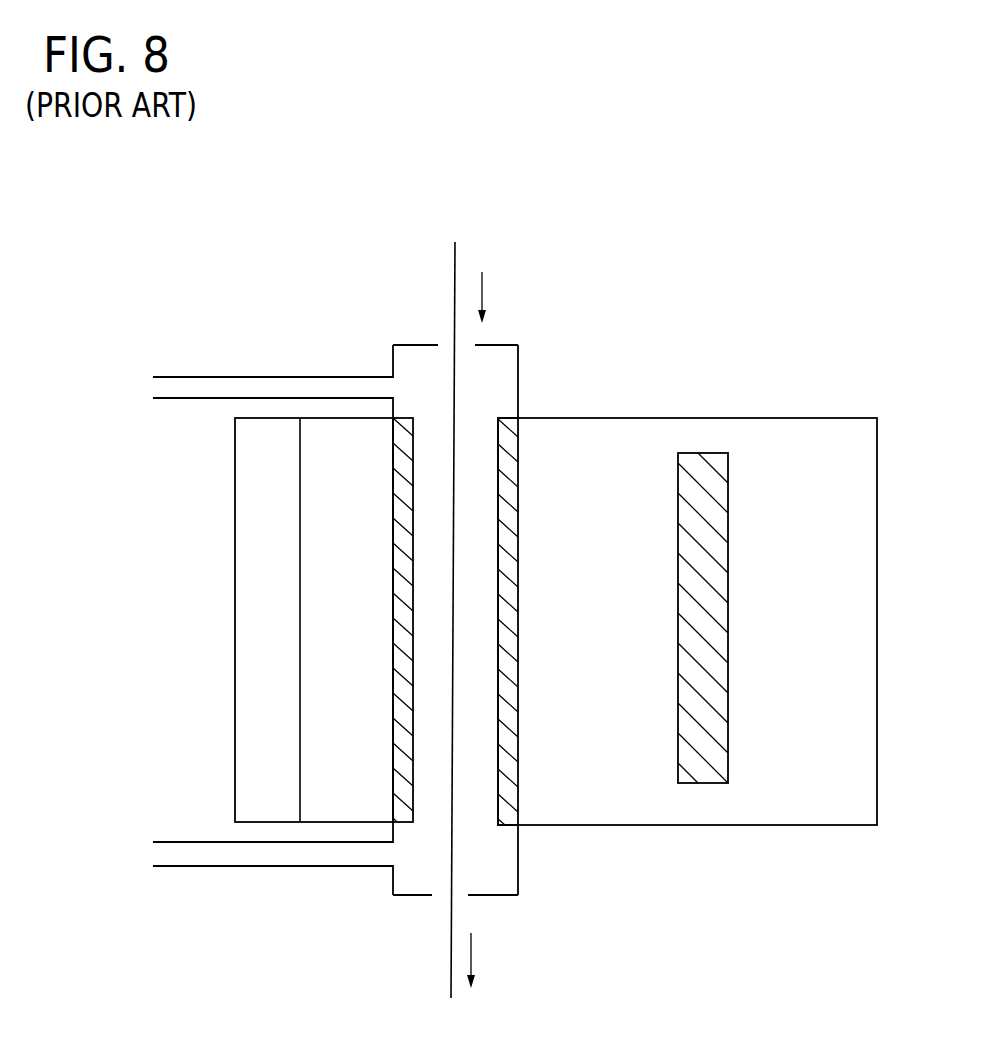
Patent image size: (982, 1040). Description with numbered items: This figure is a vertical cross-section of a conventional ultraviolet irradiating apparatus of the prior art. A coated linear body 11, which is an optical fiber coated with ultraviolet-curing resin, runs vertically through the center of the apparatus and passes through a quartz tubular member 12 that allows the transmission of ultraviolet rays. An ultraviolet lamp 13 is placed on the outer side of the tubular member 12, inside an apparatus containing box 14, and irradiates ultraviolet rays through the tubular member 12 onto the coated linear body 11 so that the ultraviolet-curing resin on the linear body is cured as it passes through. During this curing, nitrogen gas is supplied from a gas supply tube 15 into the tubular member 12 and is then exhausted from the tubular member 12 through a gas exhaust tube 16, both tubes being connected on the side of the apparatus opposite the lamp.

The coated linear body 11 is at (456, 270).
The quartz tubular member 12 is at (518, 490).
The ultraviolet lamp 13 is at (702, 482).
The apparatus containing box 14 is at (822, 418).
The gas supply tube 15 is at (294, 855).
The gas exhaust tube 16 is at (306, 388).